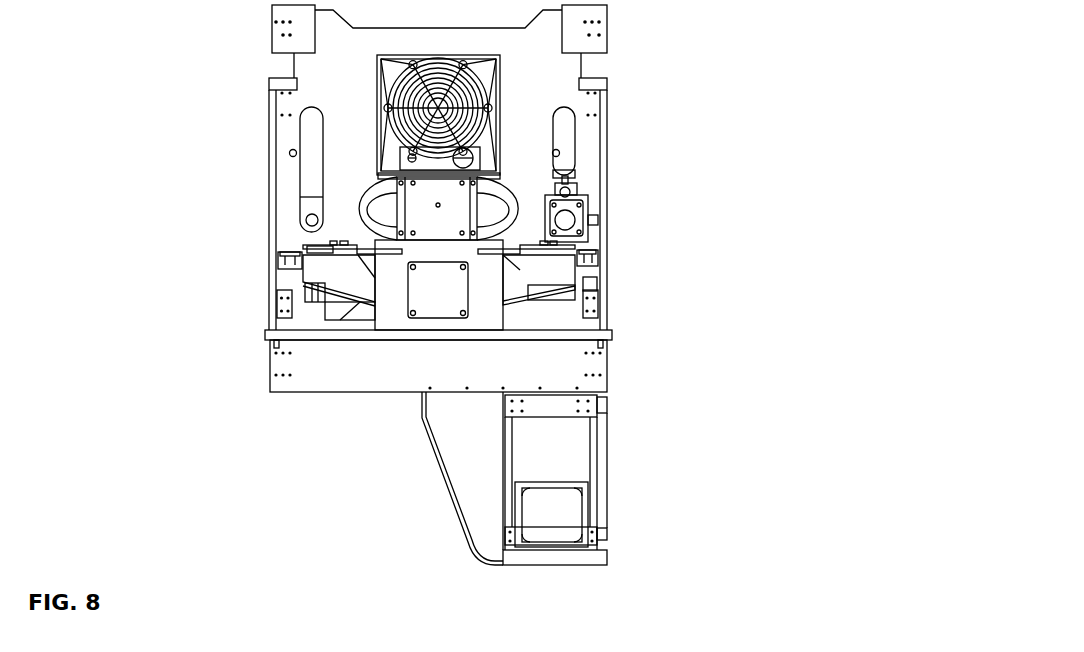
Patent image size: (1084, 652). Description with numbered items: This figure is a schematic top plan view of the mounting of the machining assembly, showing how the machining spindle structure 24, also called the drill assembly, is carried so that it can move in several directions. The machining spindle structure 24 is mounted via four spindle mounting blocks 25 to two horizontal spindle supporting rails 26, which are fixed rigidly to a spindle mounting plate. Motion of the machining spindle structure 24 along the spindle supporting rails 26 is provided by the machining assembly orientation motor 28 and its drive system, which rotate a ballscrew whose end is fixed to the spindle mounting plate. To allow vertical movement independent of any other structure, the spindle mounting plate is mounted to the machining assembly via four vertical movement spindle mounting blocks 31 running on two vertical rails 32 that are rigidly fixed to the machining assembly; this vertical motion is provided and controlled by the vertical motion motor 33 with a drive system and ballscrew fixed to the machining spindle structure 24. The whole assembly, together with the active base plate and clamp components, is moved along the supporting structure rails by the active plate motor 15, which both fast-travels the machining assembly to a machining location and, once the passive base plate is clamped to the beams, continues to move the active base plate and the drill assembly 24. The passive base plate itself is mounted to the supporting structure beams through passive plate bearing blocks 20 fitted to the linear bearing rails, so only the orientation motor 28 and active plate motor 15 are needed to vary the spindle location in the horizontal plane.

The active plate motor 15 is at (553, 522).
The passive plate bearing blocks 20 is at (272, 31).
The machining spindle structure 24 is at (455, 213).
The spindle mounting blocks 25 is at (583, 222).
The spindle supporting rails 26 is at (307, 245).
The machining assembly orientation motor 28 is at (592, 297).
The vertical movement spindle mounting blocks 31 is at (429, 274).
The vertical rails 32 is at (280, 258).
The vertical motion motor 33 is at (440, 290).